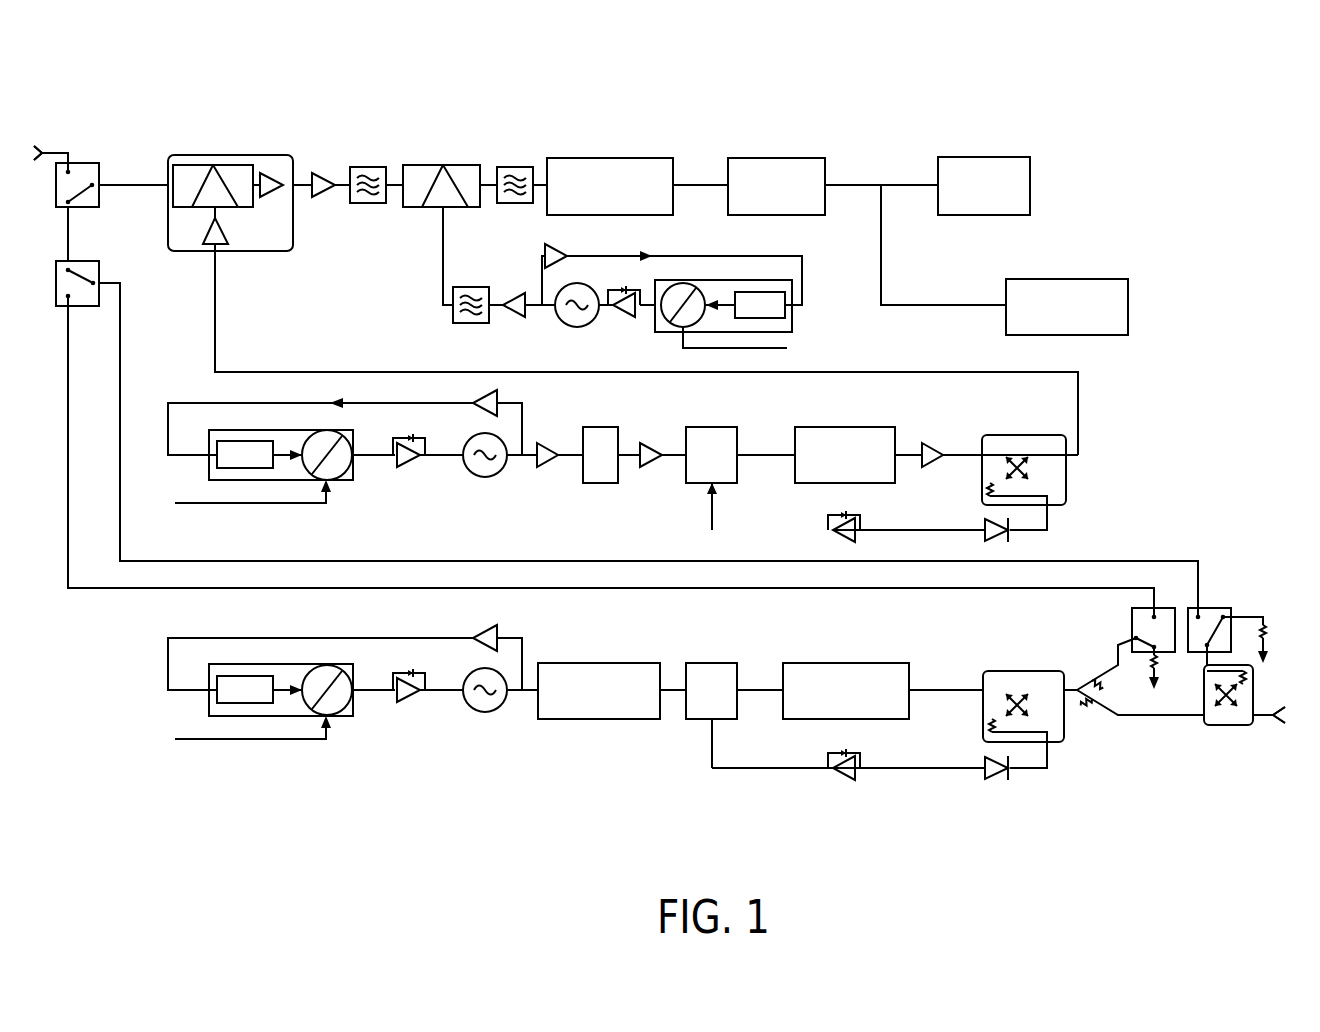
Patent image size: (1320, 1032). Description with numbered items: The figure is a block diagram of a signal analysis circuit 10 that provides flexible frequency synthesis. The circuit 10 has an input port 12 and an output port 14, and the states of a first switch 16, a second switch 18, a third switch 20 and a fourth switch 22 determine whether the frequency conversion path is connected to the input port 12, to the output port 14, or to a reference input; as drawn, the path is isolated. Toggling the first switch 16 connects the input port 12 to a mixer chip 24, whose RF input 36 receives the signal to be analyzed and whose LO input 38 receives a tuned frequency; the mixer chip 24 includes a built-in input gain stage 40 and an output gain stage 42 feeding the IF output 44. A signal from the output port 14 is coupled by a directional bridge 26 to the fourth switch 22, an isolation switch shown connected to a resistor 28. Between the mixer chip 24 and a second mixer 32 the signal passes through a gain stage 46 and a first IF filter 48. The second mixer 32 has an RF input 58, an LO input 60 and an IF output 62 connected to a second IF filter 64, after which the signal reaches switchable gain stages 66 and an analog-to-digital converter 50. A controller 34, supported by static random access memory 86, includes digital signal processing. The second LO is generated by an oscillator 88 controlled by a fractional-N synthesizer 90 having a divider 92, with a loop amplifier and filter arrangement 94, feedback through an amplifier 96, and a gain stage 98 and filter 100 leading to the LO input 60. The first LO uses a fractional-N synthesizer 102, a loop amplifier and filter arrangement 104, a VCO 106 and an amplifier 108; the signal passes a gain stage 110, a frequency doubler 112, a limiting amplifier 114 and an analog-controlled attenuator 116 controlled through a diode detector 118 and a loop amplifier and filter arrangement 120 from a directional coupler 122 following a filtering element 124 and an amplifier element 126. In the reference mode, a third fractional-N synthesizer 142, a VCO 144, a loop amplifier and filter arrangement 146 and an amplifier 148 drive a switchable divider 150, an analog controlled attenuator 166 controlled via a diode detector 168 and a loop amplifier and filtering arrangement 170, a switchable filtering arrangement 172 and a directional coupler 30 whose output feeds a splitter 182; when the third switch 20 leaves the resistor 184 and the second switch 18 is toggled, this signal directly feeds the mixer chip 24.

The circuit 10 is at (1140, 95).
The input port 12 is at (68, 150).
The output port 14 is at (1268, 728).
The first switch 16 is at (56, 190).
The second switch 18 is at (56, 290).
The third switch 20 is at (1133, 624).
The fourth switch 22 is at (1213, 608).
The mixer chip 24 is at (220, 207).
The directional bridge 26 is at (1241, 727).
The resistor 28 is at (1267, 624).
The directional coupler 30 is at (992, 671).
The second mixer 32 is at (459, 196).
The controller 34 is at (1114, 279).
The RF input 36 is at (200, 165).
The LO input 38 is at (195, 208).
The input gain stage 40 is at (217, 244).
The output gain stage 42 is at (277, 182).
The IF output 44 is at (228, 165).
The gain stage 46 is at (322, 197).
The first IF filter 48 is at (360, 167).
The analog-to-digital converter 50 is at (810, 158).
The RF input 58 is at (410, 208).
The LO input 60 is at (460, 208).
The IF output 62 is at (480, 205).
The second IF filter 64 is at (506, 167).
The switchable gain stages 66 is at (667, 158).
The static random access memory 86 is at (1022, 157).
The oscillator 88 is at (565, 326).
The fractional-N synthesizer 90 is at (752, 293).
The divider 92 is at (773, 292).
The loop amplifier and filter arrangement 94 is at (628, 319).
The amplifier 96 is at (563, 257).
The gain stage 98 is at (517, 318).
The filter 100 is at (460, 323).
The fractional-N synthesizer 102 is at (347, 480).
The loop amplifier and filter arrangement 104 is at (412, 466).
The VCO 106 is at (483, 478).
The amplifier 108 is at (498, 402).
The gain stage 110 is at (552, 468).
The frequency doubler 112 is at (605, 427).
The limiting amplifier 114 is at (645, 468).
The analog-controlled attenuator 116 is at (722, 427).
The diode detector 118 is at (984, 524).
The loop amplifier and filter arrangement 120 is at (830, 523).
The directional coupler 122 is at (1060, 490).
The filtering element 124 is at (880, 427).
The amplifier element 126 is at (936, 443).
The third fractional-N synthesizer 142 is at (347, 714).
The VCO 144 is at (483, 713).
The loop amplifier and filter arrangement 146 is at (412, 702).
The amplifier 148 is at (498, 637).
The switchable divider 150 is at (640, 719).
The analog controlled attenuator 166 is at (703, 663).
The diode detector 168 is at (986, 760).
The loop amplifier and filtering arrangement 170 is at (843, 783).
The switchable filtering arrangement 172 is at (793, 663).
The splitter 182 is at (1085, 724).
The resistor 184 is at (1158, 672).